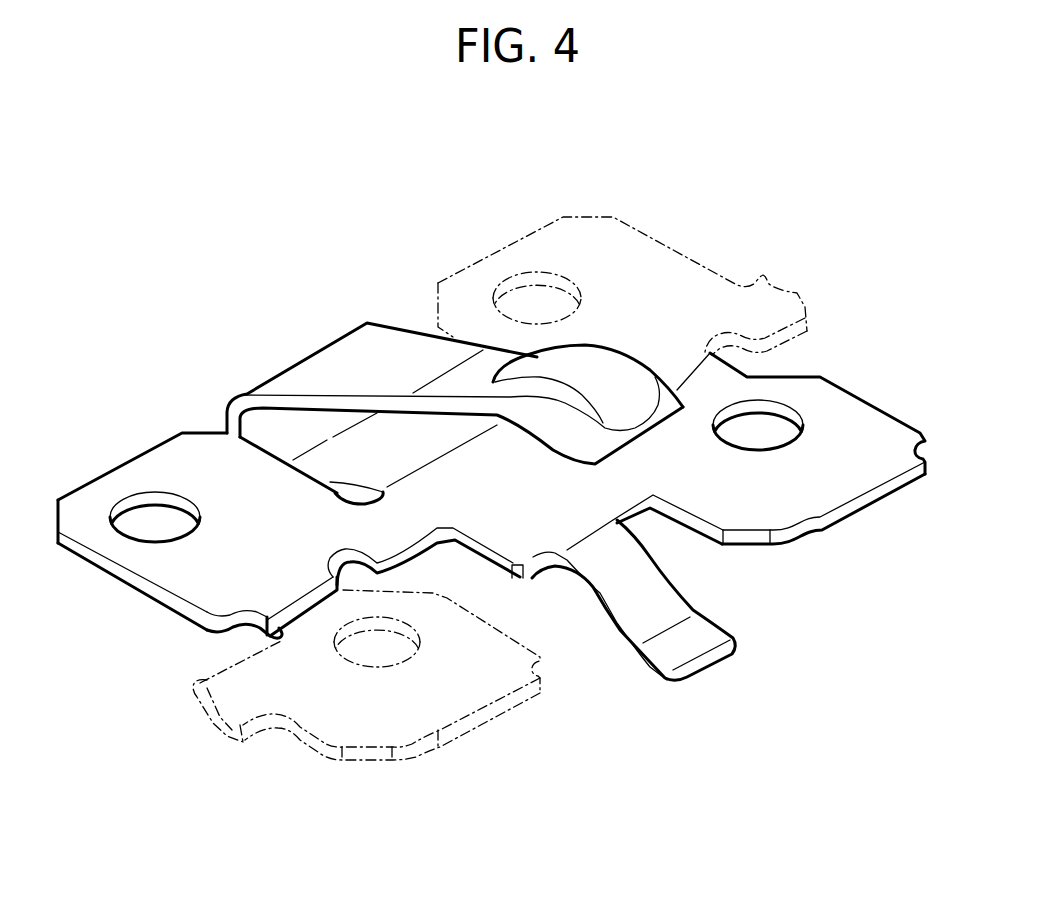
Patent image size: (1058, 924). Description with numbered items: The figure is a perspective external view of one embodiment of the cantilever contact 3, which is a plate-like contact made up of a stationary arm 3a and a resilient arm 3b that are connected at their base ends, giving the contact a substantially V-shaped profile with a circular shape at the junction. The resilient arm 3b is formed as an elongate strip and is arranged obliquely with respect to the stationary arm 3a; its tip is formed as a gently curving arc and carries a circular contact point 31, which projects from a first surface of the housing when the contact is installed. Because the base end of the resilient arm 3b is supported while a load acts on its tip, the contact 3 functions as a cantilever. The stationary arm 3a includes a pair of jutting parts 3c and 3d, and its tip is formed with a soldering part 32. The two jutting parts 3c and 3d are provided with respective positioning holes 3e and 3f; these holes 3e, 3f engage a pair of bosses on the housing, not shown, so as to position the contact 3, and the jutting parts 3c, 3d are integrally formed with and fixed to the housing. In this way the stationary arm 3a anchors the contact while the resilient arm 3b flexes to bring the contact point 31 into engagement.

The contact 3 is at (843, 220).
The contact point 31 is at (600, 383).
The soldering part 32 is at (707, 662).
The stationary arm 3a is at (530, 530).
The resilient arm 3b is at (342, 368).
The jutting part 3c is at (217, 577).
The jutting part 3d is at (843, 480).
The positioning hole 3e is at (147, 517).
The positioning hole 3f is at (773, 427).